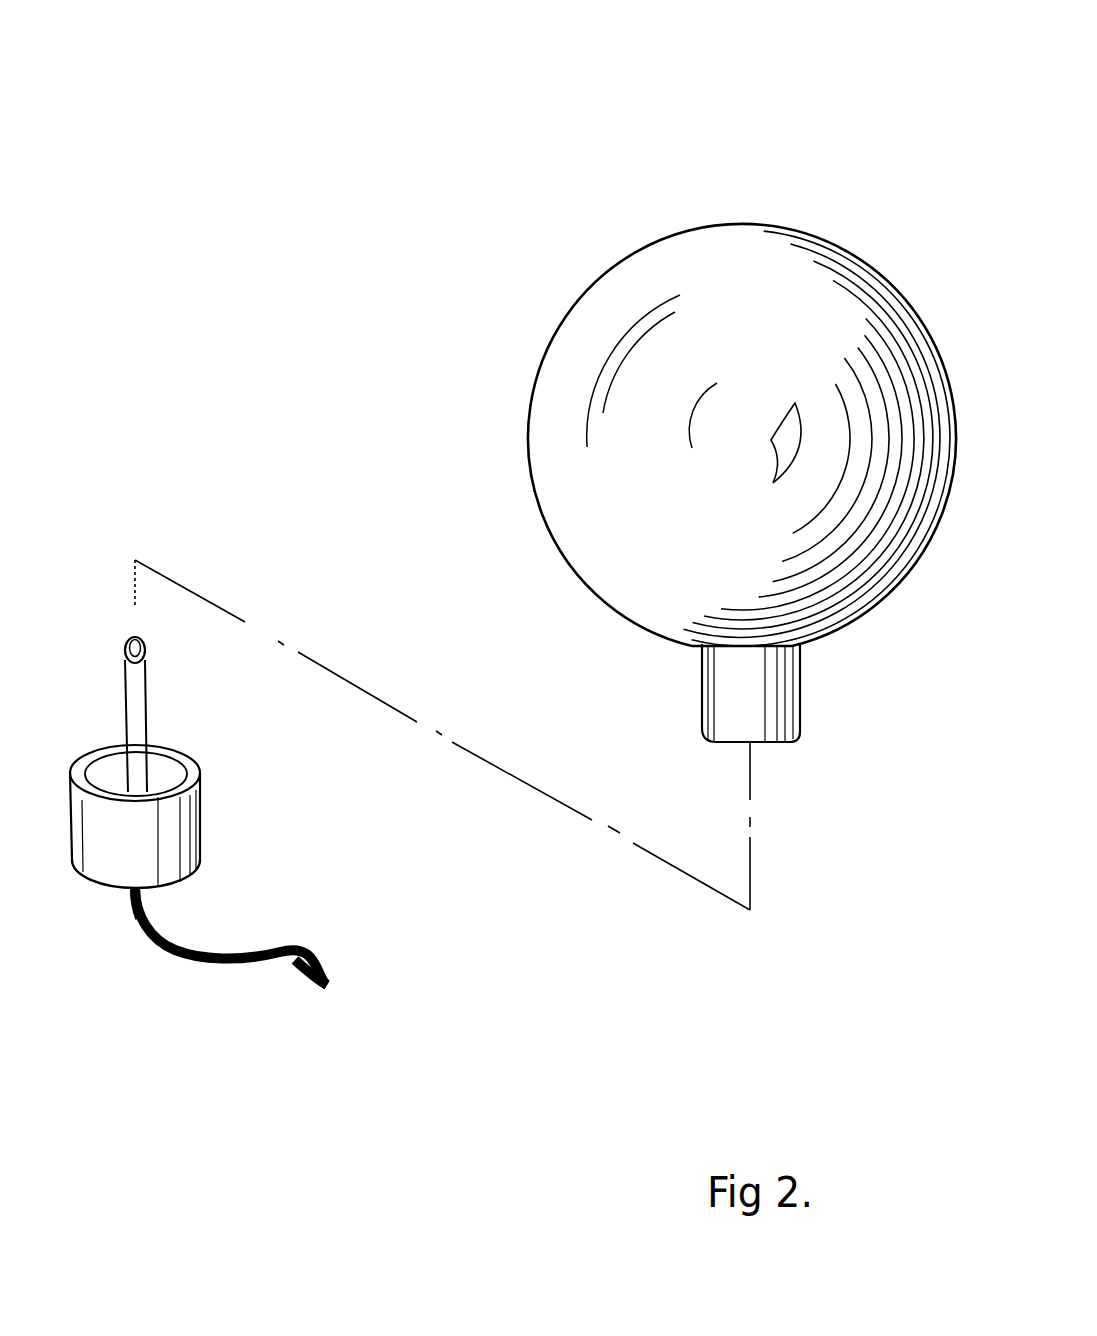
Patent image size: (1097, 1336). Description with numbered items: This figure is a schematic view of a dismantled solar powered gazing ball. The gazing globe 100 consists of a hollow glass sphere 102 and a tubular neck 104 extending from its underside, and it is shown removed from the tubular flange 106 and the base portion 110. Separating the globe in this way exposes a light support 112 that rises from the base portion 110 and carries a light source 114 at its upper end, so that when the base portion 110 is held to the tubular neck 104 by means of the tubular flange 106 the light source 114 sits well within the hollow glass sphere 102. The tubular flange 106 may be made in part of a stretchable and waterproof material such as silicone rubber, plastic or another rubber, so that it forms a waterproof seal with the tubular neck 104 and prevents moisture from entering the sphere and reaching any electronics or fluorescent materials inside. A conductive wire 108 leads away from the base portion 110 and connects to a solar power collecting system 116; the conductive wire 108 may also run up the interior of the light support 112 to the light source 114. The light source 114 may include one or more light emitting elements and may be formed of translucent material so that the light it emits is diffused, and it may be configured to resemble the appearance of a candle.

The gazing globe 100 is at (558, 202).
The hollow glass sphere 102 is at (513, 358).
The tubular neck 104 is at (687, 683).
The tubular flange 106 is at (207, 822).
The conductive wire 108 is at (257, 980).
The base portion 110 is at (118, 907).
The light support 112 is at (153, 697).
The light source 114 is at (118, 630).
The solar power collecting system 116 is at (333, 988).